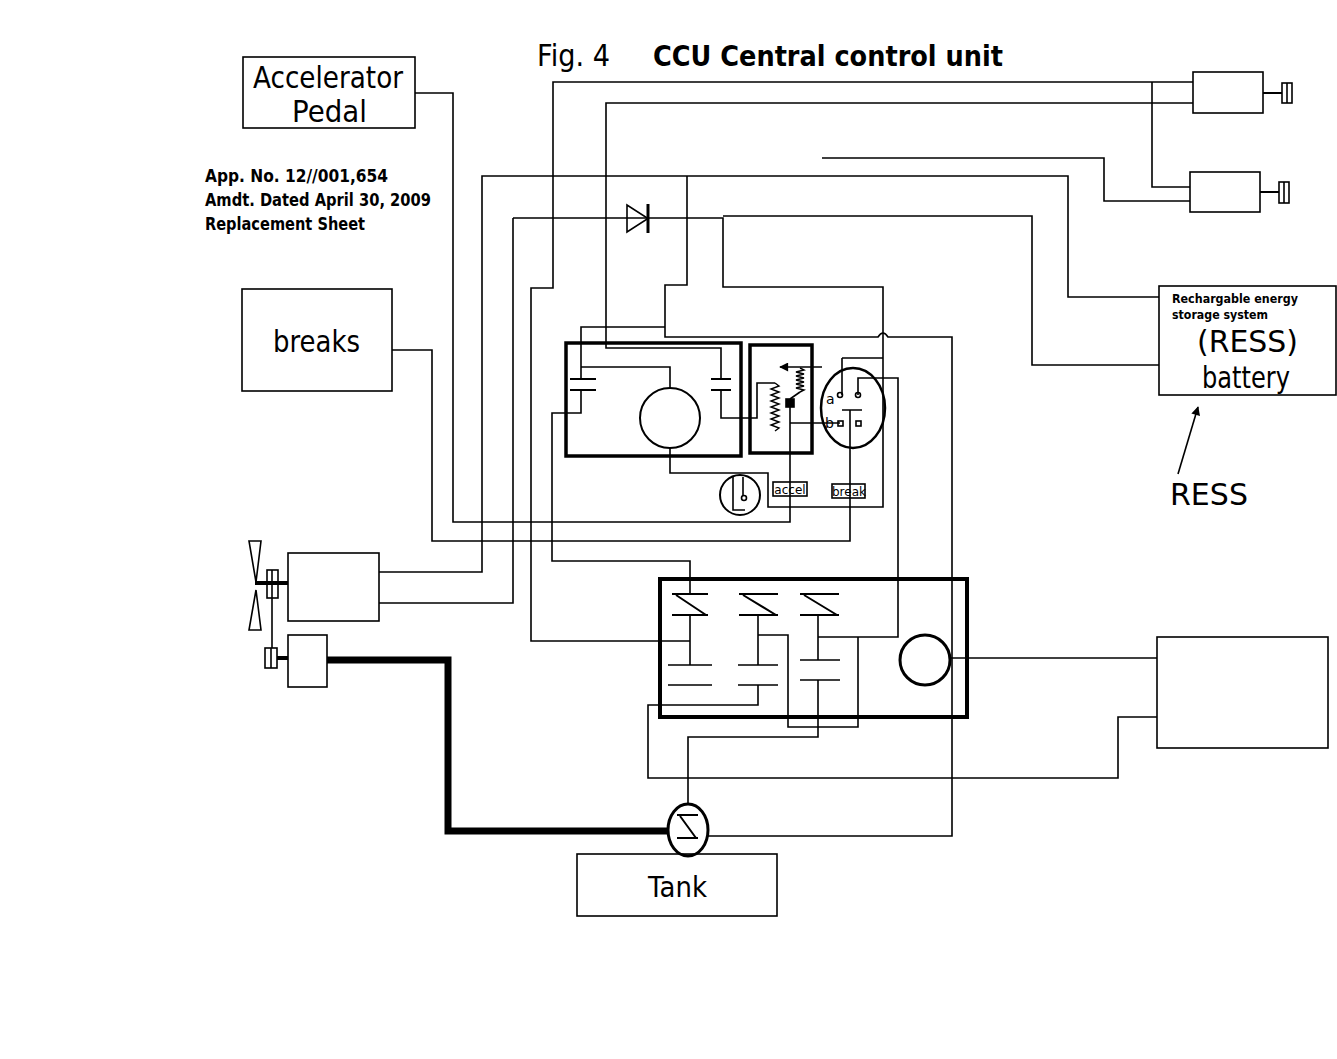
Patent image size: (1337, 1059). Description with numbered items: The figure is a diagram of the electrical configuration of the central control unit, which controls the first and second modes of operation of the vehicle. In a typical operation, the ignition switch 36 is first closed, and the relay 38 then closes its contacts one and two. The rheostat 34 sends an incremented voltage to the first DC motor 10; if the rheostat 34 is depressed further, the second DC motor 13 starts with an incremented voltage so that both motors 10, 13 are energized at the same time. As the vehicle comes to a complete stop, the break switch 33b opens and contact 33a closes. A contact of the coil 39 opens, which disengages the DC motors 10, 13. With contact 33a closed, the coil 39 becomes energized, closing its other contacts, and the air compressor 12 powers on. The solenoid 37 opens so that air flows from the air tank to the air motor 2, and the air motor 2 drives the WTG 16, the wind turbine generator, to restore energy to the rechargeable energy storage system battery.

The air motor 2 is at (300, 692).
The DC motor 1 10 is at (1180, 109).
The air compressor 12 is at (1204, 760).
The DC motor 2 13 is at (1188, 213).
The WTG 16 is at (329, 549).
The contact 33a is at (863, 401).
The break switch 33b is at (865, 426).
The rheostat 34 is at (816, 456).
The ignition switch 36 is at (717, 504).
The solenoid 37 is at (713, 837).
The relay 38 is at (631, 438).
The coil 39 is at (959, 731).